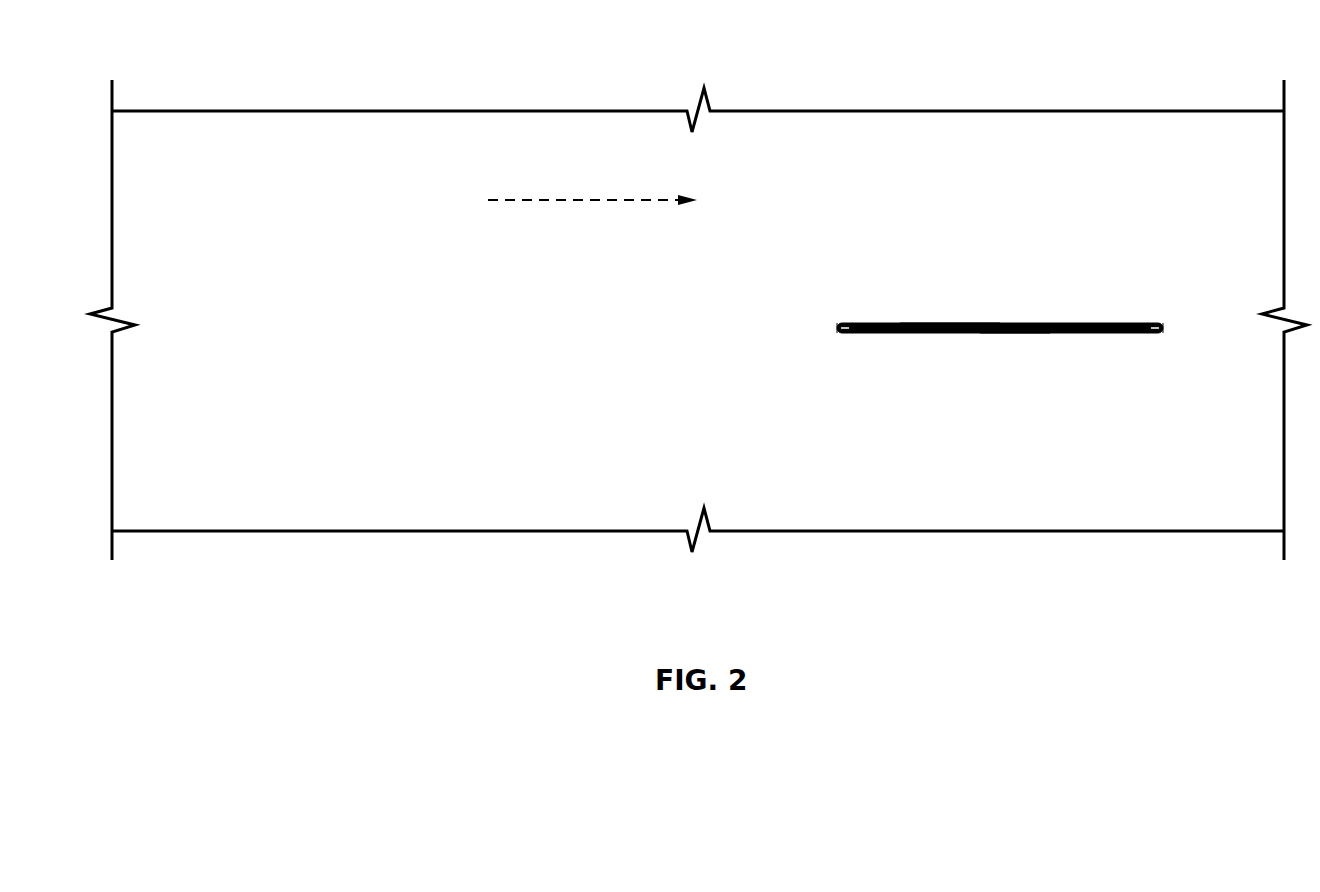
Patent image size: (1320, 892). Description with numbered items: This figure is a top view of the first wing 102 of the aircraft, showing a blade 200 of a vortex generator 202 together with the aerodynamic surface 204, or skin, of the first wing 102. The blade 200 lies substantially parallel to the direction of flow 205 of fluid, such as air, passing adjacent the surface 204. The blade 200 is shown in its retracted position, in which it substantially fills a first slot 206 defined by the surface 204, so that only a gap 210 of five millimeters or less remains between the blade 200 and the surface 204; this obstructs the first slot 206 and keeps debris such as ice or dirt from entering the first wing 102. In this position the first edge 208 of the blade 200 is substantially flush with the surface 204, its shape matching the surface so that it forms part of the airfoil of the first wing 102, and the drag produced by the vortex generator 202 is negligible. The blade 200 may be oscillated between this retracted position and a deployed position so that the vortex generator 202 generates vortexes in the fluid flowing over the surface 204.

The first wing 102 is at (311, 500).
The blade 200 is at (1067, 326).
The vortex generator 202 is at (952, 312).
The aerodynamic surface 204 is at (483, 282).
The direction of flow 205 is at (530, 197).
The first slot 206 is at (1118, 335).
The first edge 208 is at (1012, 335).
The gap 210 is at (862, 335).